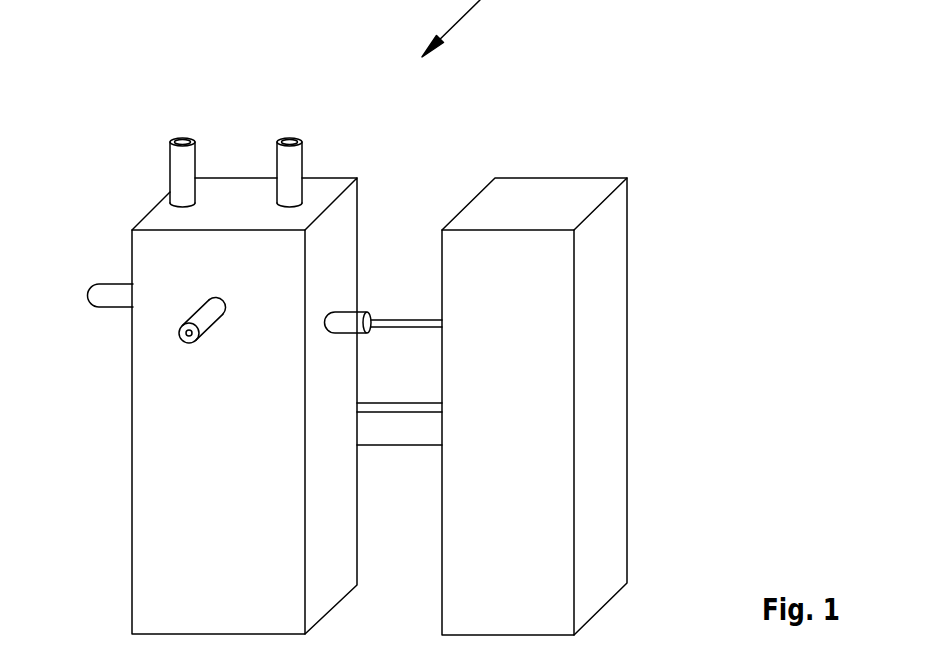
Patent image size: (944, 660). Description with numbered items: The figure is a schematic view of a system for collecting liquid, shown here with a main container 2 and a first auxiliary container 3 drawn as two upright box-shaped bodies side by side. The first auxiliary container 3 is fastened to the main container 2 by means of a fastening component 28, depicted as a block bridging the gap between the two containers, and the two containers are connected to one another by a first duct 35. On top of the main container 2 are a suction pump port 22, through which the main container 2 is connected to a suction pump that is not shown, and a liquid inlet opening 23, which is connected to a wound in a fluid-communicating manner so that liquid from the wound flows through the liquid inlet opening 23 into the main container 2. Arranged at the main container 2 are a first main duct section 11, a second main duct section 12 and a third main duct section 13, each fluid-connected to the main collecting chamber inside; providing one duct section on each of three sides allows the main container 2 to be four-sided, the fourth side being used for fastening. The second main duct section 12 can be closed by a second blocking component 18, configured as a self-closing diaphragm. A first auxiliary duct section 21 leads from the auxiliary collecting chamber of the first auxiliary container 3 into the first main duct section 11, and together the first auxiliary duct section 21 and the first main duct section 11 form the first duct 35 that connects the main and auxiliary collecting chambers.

The main container 2 is at (148, 482).
The first auxiliary container 3 is at (613, 450).
The first main duct section 11 is at (362, 317).
The second main duct section 12 is at (205, 322).
The third main duct section 13 is at (107, 293).
The second blocking component 18 is at (189, 345).
The first auxiliary duct section 21 is at (413, 328).
The suction pump port 22 is at (185, 170).
The liquid inlet opening 23 is at (293, 157).
The fastening component 28 is at (390, 437).
The first duct 35 is at (376, 333).